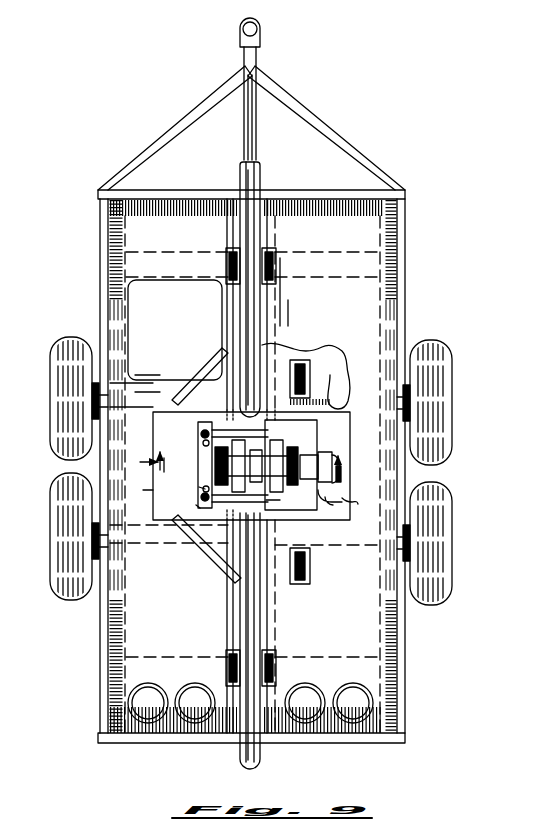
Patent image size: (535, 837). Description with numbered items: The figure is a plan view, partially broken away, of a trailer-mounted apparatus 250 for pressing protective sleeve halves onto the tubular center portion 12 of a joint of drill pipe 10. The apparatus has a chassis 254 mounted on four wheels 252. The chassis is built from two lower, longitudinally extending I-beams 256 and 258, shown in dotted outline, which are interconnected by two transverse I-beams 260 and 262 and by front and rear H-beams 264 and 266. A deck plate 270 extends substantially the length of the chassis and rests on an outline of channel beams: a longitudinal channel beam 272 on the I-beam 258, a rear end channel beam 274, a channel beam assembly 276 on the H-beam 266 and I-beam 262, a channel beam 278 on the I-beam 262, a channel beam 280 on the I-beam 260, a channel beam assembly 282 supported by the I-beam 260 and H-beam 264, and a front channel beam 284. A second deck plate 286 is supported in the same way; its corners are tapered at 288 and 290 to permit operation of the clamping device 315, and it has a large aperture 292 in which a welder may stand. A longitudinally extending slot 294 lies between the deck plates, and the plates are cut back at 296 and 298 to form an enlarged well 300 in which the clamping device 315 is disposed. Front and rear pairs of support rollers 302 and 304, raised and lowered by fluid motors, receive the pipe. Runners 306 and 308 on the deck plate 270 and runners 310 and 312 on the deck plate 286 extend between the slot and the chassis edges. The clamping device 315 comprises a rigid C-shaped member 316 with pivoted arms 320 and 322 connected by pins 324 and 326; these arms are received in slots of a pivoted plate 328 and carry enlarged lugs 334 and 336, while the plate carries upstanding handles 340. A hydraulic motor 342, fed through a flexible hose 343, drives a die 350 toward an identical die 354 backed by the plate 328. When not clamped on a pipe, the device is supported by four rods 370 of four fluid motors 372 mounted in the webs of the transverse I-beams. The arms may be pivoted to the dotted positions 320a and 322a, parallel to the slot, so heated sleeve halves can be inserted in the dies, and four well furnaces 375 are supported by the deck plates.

The joint of drill pipe 10 is at (261, 467).
The tubular center portion 12 is at (258, 183).
The apparatus 250 is at (96, 264).
The wheels 252 is at (50, 400).
The chassis 254 is at (96, 660).
The I-beam 256 is at (100, 216).
The I-beam 258 is at (398, 218).
The transverse I-beam 260 is at (230, 447).
The transverse I-beam 262 is at (200, 548).
The front H-beam 264 is at (332, 272).
The rear H-beam 266 is at (360, 662).
The deck plate 270 is at (332, 605).
The channel beam 272 is at (398, 652).
The rear end channel beam 274 is at (330, 746).
The channel beam assembly 276 is at (284, 640).
The channel beam 278 is at (338, 540).
The channel beam 280 is at (340, 392).
The channel beam assembly 282 is at (288, 322).
The channel beam 284 is at (338, 226).
The second deck plate 286 is at (170, 424).
The tapered corner 288 is at (210, 564).
The tapered corner 290 is at (194, 384).
The aperture 292 is at (132, 317).
The longitudinally extending slot 294 is at (266, 216).
The cut back 296 is at (155, 494).
The cut back 298 is at (357, 508).
The well 300 is at (320, 460).
The front support rollers 302 is at (226, 250).
The rear support rollers 304 is at (226, 658).
The runner 306 is at (386, 192).
The runner 308 is at (388, 746).
The runner 310 is at (184, 192).
The runner 312 is at (150, 742).
The clamping device 315 is at (139, 461).
The C-shaped member 316 is at (320, 496).
The pivoted arm 320 is at (250, 500).
The pivoted position of arm 320 320a is at (282, 580).
The pivoted arm 322 is at (249, 465).
The pivoted position of arm 322 322a is at (290, 343).
The pin 324 is at (276, 505).
The pin 326 is at (276, 431).
The pivoted plate 328 is at (203, 489).
The lug 334 is at (198, 505).
The lug 336 is at (198, 430).
The handles 340 is at (202, 443).
The hydraulic motor 342 is at (342, 457).
The flexible hose 343 is at (342, 480).
The die 350 is at (275, 462).
The die 354 is at (264, 466).
The rods 370 is at (231, 413).
The fluid motors 372 is at (212, 362).
The well furnaces 375 is at (198, 690).